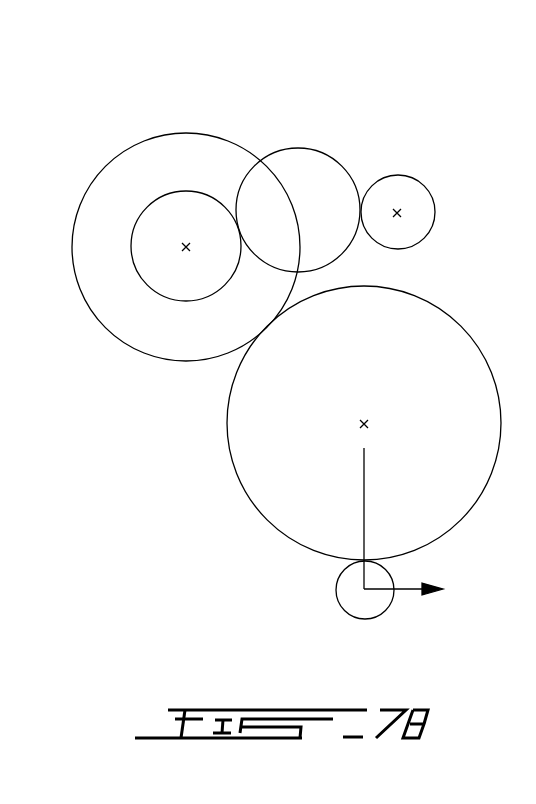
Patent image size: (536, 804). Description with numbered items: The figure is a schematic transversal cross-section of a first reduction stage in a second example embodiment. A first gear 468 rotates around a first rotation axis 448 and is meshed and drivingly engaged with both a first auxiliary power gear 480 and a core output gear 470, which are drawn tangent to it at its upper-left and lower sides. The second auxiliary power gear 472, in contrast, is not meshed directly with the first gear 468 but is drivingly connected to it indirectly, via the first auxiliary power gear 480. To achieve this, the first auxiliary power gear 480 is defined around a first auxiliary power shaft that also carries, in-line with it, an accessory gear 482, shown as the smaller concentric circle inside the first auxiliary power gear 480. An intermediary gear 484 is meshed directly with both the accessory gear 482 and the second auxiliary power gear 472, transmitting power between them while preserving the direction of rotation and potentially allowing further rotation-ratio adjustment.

The first auxiliary power gear 480 is at (153, 132).
The accessory gear 482 is at (196, 190).
The intermediary gear 484 is at (318, 148).
The second auxiliary power gear 472 is at (416, 176).
The first gear 468 is at (433, 303).
The first rotation axis 448 is at (364, 424).
The core output gear 470 is at (342, 610).